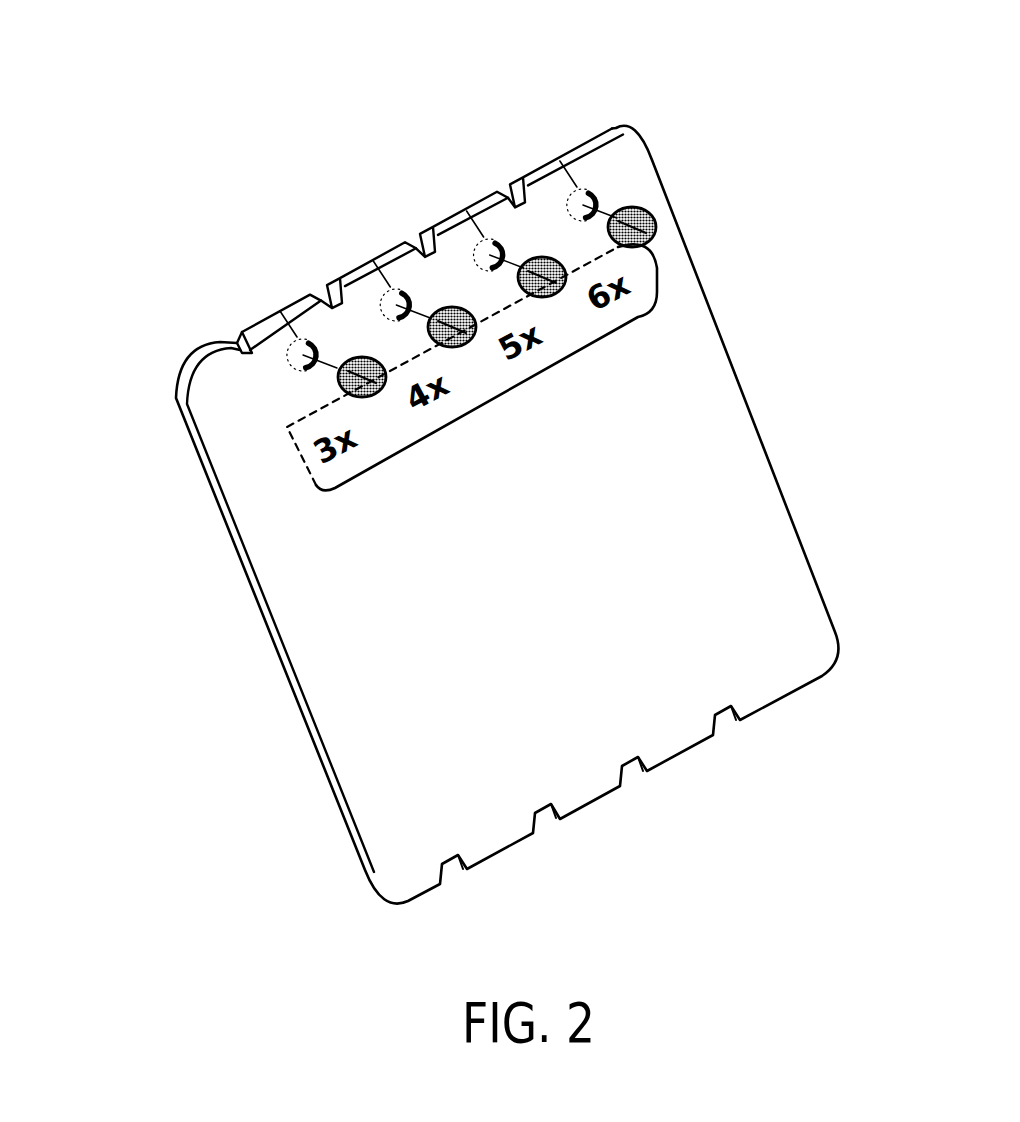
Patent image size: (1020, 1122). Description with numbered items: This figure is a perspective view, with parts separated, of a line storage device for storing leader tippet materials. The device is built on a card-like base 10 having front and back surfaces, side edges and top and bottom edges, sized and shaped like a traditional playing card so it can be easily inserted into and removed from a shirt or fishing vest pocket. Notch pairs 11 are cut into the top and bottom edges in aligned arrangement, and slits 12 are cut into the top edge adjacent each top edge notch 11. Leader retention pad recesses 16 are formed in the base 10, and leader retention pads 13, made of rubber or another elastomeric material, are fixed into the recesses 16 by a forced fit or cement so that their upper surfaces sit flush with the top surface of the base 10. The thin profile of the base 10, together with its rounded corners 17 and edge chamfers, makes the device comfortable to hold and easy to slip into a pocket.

The card-like base 10 is at (302, 710).
The notch pairs 11 is at (235, 340).
The slits 12 is at (479, 235).
The leader retention pads 13 is at (657, 217).
The leader retention pad recesses 16 is at (576, 190).
The rounded corners 17 is at (180, 374).